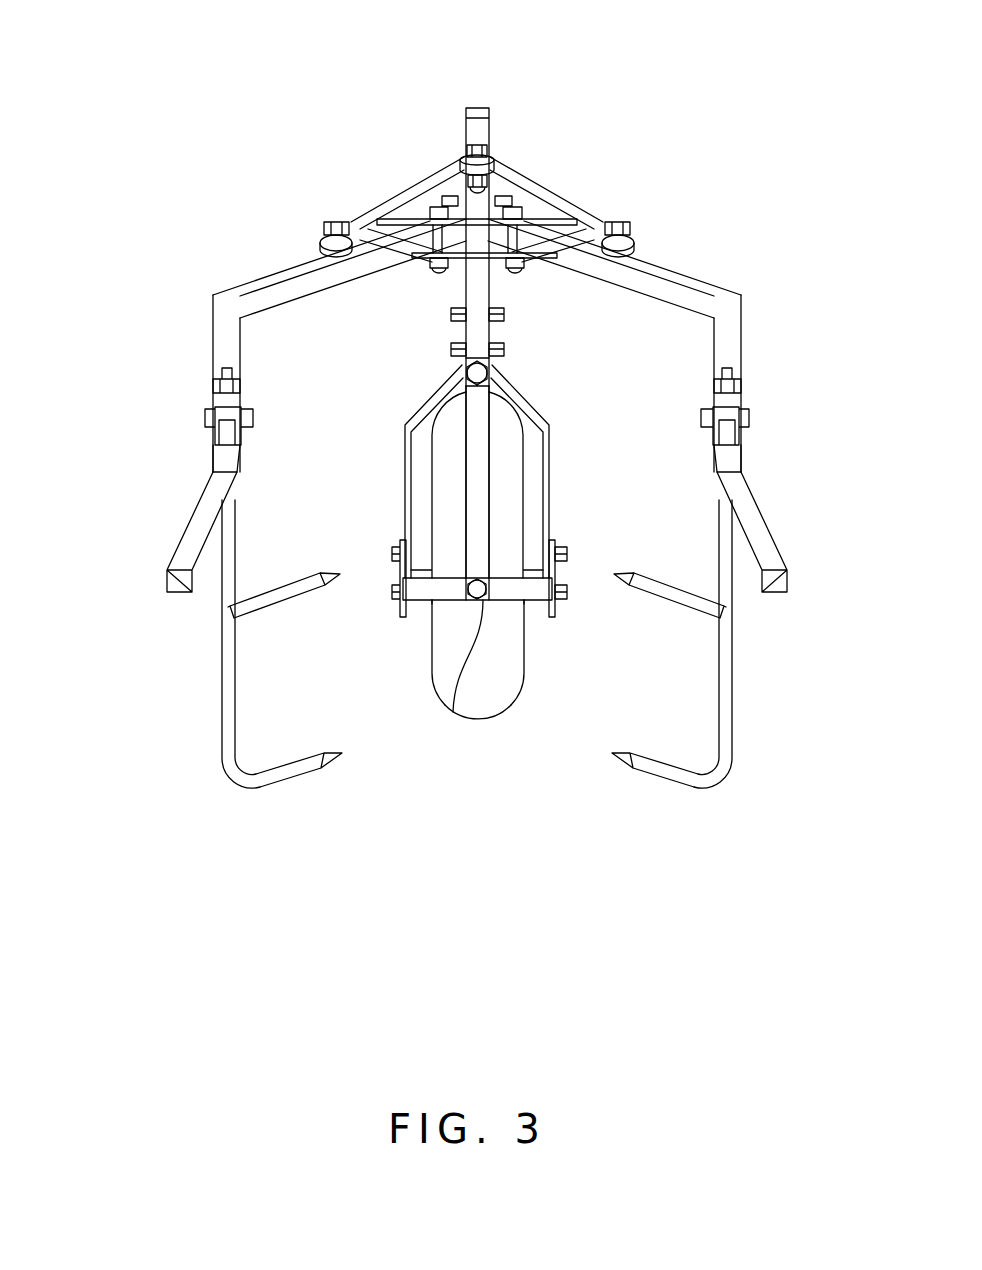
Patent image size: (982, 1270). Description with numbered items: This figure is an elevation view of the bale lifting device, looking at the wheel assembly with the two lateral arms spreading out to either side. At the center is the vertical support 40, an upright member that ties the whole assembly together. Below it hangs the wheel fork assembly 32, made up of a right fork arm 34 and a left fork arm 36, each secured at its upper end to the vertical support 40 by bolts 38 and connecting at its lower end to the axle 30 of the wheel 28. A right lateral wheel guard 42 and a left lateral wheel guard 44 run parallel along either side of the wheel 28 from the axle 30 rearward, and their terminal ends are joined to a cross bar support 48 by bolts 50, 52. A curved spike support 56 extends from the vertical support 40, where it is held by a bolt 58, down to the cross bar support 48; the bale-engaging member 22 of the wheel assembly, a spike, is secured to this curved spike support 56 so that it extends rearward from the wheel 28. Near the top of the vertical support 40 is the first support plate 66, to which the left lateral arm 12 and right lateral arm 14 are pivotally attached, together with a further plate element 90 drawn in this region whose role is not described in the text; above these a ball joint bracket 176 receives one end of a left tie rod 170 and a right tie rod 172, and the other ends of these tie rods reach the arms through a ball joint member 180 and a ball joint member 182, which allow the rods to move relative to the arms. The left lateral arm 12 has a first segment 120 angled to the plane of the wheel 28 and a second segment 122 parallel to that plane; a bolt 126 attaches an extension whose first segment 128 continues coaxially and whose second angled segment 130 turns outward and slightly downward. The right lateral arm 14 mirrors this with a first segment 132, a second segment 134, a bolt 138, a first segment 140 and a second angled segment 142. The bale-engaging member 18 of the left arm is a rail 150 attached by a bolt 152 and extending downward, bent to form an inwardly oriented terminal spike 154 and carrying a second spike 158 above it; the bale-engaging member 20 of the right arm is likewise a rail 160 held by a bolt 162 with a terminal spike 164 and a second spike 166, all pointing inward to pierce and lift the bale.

The left lateral arm 12 is at (147, 232).
The right lateral arm 14 is at (817, 248).
The bale-engaging member 18 is at (178, 762).
The bale-engaging member 20 is at (773, 768).
The bale-engaging member 22 is at (442, 640).
The wheel 28 is at (480, 717).
The axle 30 is at (535, 552).
The wheel fork assembly 32 is at (588, 353).
The right fork arm 34 is at (537, 407).
The left fork arm 36 is at (405, 415).
The bolts 38 is at (458, 352).
The vertical support 40 is at (470, 112).
The right lateral wheel guard 42 is at (560, 612).
The left lateral wheel guard 44 is at (400, 620).
The cross bar support 48 is at (447, 603).
The bolts 50 is at (578, 590).
The bolts 52 is at (387, 590).
The curved spike support 56 is at (463, 497).
The bolt 58 is at (495, 365).
The first support plate 66 is at (520, 278).
The mounting plate 90 is at (537, 210).
The first segment 120 is at (253, 277).
The second segment 122 is at (213, 343).
The bolt 126 is at (253, 413).
The first segment 128 is at (213, 452).
The second angled segment 130 is at (175, 563).
The first segment 132 is at (695, 278).
The second segment 134 is at (741, 345).
The bolt 138 is at (702, 410).
The first segment 140 is at (741, 458).
The second angled segment 142 is at (800, 553).
The rail 150 is at (225, 615).
The bolt 152 is at (213, 387).
The terminal spike 154 is at (300, 777).
The second spike 158 is at (285, 577).
The rail 160 is at (737, 722).
The bolt 162 is at (741, 390).
The terminal spike 164 is at (650, 778).
The second spike 166 is at (662, 580).
The left tie rod 170 is at (438, 226).
The right tie rod 172 is at (512, 205).
The ball joint bracket 176 is at (500, 150).
The ball joint member 180 is at (320, 240).
The ball joint member 182 is at (630, 222).